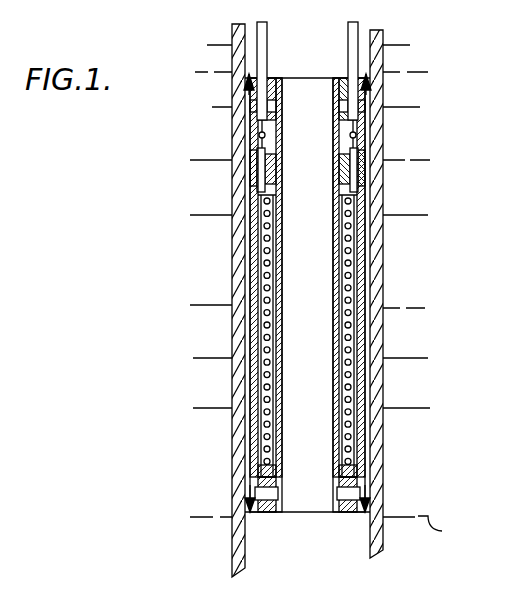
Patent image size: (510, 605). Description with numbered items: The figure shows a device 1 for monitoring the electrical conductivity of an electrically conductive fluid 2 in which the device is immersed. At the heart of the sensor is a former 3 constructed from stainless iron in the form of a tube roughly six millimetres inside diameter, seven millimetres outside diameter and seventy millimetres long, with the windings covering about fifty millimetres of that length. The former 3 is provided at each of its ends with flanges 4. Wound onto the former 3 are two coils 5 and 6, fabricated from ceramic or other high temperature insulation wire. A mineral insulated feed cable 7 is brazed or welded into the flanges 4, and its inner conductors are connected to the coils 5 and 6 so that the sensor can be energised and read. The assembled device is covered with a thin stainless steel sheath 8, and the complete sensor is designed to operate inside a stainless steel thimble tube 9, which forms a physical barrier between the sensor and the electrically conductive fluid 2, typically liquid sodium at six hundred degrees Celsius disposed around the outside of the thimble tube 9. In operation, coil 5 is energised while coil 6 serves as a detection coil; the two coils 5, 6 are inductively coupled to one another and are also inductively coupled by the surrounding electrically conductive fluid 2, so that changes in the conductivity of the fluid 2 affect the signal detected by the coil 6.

The device 1 is at (375, 262).
The electrically conductive fluid 2 is at (436, 530).
The former 3 is at (372, 381).
The flanges 4 is at (250, 504).
The coil 5 is at (258, 259).
The coil 6 is at (253, 368).
The mineral insulated feed cable 7 is at (258, 42).
The stainless steel sheath 8 is at (258, 462).
The thimble tube 9 is at (362, 492).